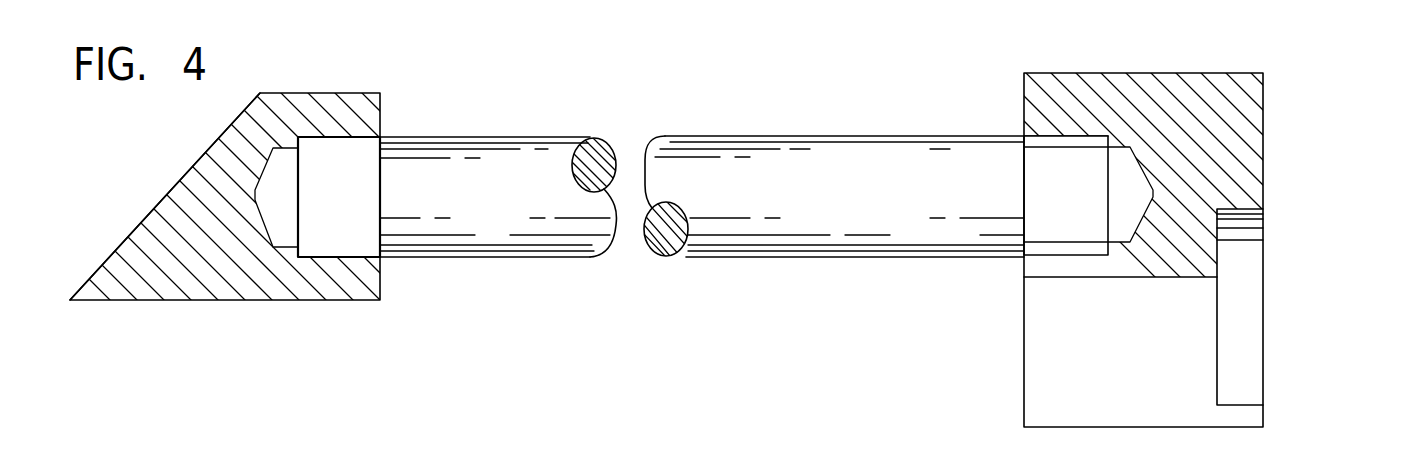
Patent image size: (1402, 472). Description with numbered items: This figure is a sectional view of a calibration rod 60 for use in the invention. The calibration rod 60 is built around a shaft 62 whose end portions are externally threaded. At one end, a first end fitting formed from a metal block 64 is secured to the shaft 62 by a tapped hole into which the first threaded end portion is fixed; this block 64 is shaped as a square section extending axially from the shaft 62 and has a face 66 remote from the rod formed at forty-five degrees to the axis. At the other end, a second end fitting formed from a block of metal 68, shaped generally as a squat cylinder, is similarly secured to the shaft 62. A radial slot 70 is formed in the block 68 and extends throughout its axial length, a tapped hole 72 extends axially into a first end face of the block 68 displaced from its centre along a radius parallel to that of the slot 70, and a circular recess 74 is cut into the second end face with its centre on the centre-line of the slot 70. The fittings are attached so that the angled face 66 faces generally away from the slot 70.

The calibration rod 60 is at (744, 188).
The shaft 62 is at (893, 257).
The metal block 64 is at (307, 300).
The face 66 is at (195, 164).
The block of metal 68 is at (1140, 236).
The radial slot 70 is at (1137, 358).
The tapped hole 72 is at (1137, 153).
The circular recess 74 is at (1222, 352).